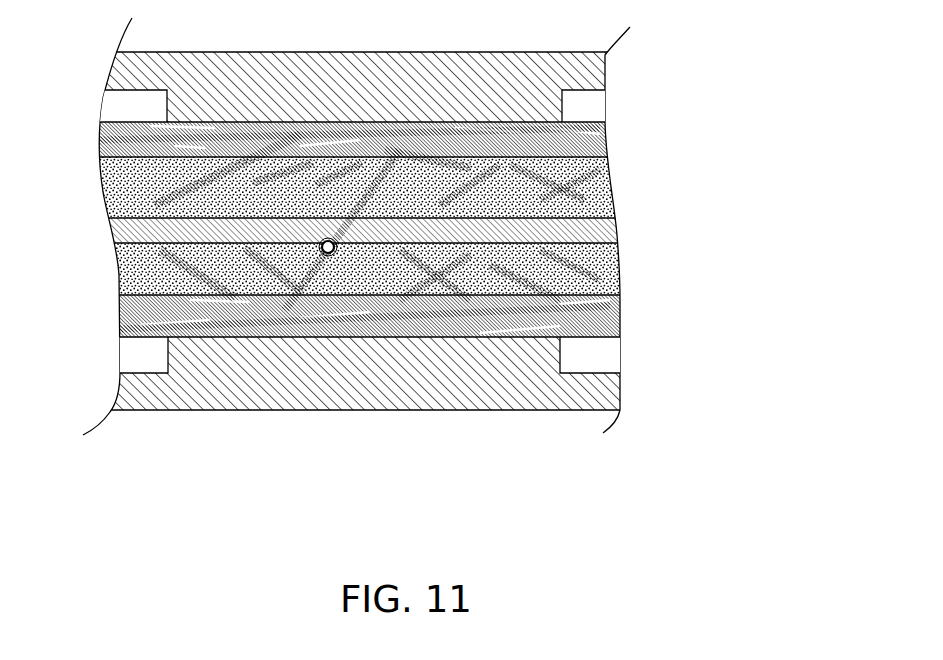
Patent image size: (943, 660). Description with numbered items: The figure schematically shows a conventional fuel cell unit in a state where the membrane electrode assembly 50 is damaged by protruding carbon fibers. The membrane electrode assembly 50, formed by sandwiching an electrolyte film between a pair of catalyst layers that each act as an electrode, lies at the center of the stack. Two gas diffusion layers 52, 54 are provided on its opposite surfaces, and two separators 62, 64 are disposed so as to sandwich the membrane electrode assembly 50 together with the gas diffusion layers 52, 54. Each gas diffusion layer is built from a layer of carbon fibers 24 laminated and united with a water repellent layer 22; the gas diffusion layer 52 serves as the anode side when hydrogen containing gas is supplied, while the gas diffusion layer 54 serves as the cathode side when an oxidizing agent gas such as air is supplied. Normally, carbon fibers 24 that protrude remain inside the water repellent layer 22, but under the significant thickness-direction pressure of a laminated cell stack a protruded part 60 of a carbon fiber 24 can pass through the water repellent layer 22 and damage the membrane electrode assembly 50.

The water repellent layer 22 is at (610, 177).
The carbon fibers 24 is at (610, 133).
The membrane electrode assembly 50 is at (110, 231).
The gas diffusion layer 52 is at (740, 123).
The gas diffusion layer 54 is at (740, 235).
The protruded part 60 is at (328, 250).
The separator 62 is at (610, 63).
The separator 64 is at (620, 388).